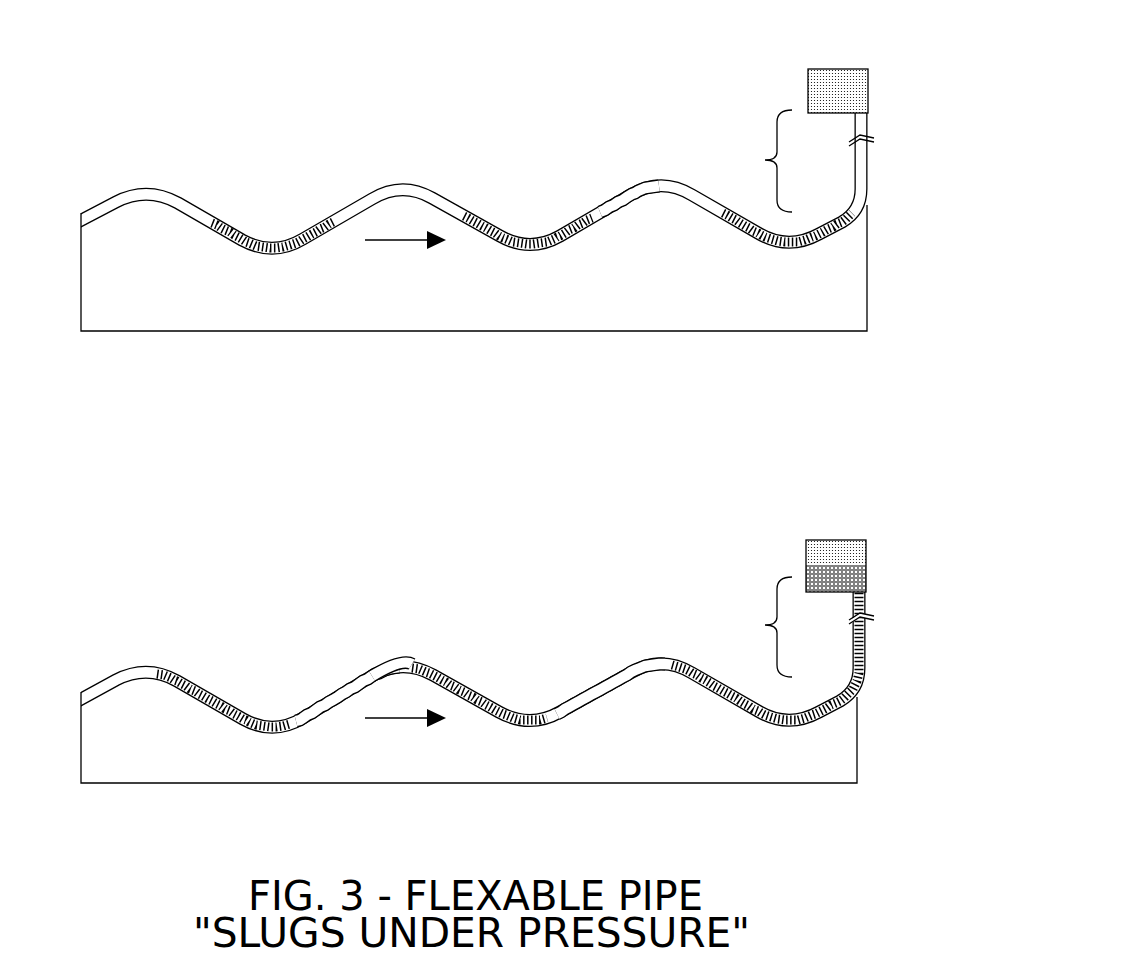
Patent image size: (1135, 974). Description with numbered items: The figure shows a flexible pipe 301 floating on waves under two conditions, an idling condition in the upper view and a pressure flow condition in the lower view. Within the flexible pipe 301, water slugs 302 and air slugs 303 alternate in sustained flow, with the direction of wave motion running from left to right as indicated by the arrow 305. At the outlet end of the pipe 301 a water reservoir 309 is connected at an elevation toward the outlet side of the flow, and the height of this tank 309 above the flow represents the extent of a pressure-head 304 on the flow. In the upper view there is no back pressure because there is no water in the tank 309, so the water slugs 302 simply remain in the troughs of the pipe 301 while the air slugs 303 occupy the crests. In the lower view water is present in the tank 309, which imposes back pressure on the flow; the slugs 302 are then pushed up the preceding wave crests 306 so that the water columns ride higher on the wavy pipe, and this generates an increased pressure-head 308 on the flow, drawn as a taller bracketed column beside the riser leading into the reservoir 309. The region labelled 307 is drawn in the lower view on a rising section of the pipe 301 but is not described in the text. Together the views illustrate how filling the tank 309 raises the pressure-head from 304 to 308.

The flexible pipe 301 is at (341, 124).
The water slugs 302 is at (559, 227).
The air slugs 303 is at (616, 186).
The pressure-head 304 is at (755, 157).
The arrow 305 is at (385, 250).
The wave crests 306 is at (462, 655).
The compressed gas pocket 307 is at (346, 673).
The increased pressure-head 308 is at (755, 622).
The water reservoir 309 is at (836, 69).